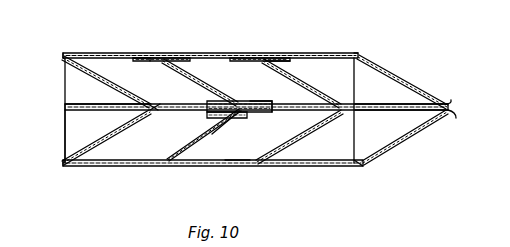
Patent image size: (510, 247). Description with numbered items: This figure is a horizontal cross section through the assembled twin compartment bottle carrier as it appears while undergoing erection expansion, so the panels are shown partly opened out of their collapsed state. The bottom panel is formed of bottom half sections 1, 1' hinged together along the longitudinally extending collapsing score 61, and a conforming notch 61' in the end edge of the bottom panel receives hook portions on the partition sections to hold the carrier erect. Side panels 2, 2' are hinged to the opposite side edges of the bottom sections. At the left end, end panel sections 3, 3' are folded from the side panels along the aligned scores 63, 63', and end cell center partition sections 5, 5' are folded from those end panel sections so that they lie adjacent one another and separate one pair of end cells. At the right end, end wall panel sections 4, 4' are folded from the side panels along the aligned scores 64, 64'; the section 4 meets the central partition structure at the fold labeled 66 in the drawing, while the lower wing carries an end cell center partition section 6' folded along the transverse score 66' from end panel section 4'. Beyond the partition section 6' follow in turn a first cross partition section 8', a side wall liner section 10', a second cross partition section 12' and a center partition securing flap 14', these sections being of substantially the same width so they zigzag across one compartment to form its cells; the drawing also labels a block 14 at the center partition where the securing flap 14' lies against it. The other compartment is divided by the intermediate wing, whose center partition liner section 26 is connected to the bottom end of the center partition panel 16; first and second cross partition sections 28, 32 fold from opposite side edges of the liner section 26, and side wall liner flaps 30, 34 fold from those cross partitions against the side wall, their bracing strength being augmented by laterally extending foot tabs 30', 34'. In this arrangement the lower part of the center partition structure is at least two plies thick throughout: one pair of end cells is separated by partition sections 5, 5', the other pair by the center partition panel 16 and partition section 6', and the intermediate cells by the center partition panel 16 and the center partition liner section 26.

The bottom half section 1 is at (49, 110).
The bottom half section 1' is at (50, 136).
The side panel 2 is at (210, 39).
The side panel 2' is at (213, 178).
The end panel section 3 is at (106, 82).
The end panel section 3' is at (106, 137).
The end wall panel section 4 is at (402, 76).
The end wall panel section 4' is at (405, 138).
The end cell center partition section 5 is at (160, 99).
The end cell center partition section 5' is at (159, 117).
The end cell center partition section 6' is at (370, 110).
The cross partition section 8' is at (299, 137).
The side wall liner section 10' is at (242, 150).
The cross partition section 12' is at (200, 135).
The connector block 14 is at (234, 129).
The center partition securing flap 14' is at (242, 125).
The center partition panel 16 is at (368, 106).
The center partition liner section 26 is at (274, 91).
The first cross partition section 28 is at (313, 90).
The side wall liner flap 30 is at (260, 72).
The foot tab 30' is at (296, 67).
The second cross partition section 32 is at (204, 84).
The second side wall liner flap 34 is at (127, 68).
The foot tab 34' is at (170, 37).
The collapsing score 61 is at (256, 99).
The notch 61' is at (88, 113).
The score 63 is at (52, 38).
The score 63' is at (70, 183).
The score 64 is at (375, 37).
The score 64' is at (374, 183).
The right end joint 66 is at (455, 90).
The transverse score 66' is at (467, 128).